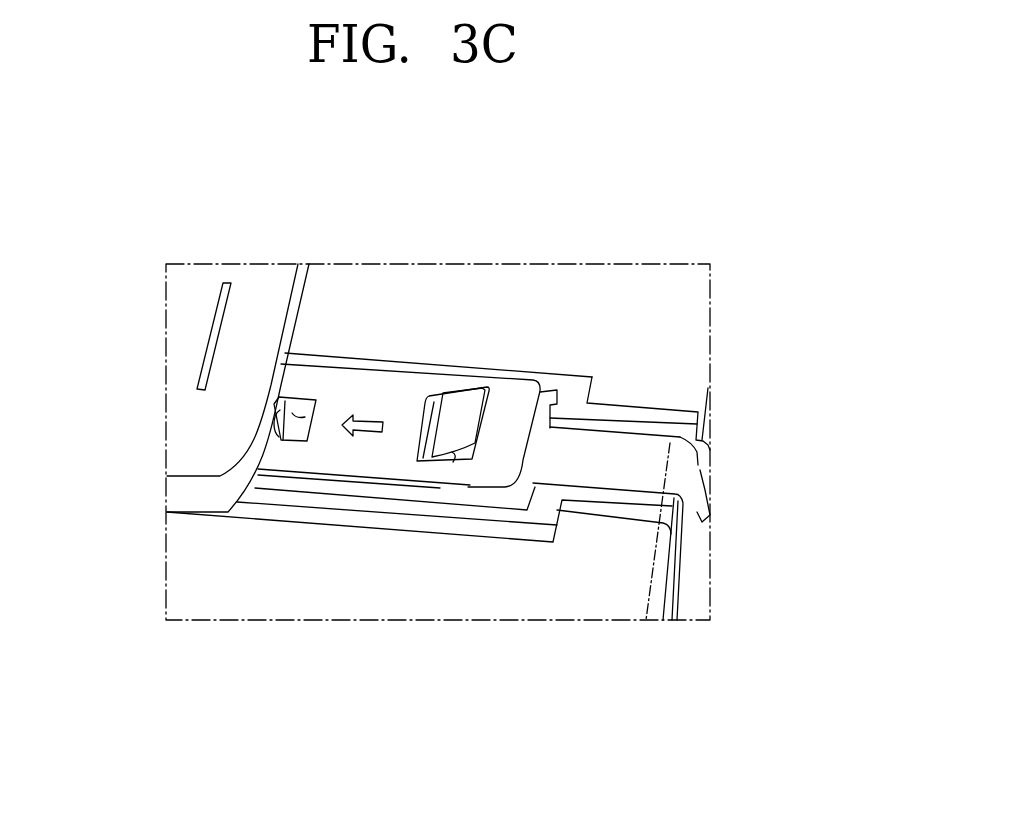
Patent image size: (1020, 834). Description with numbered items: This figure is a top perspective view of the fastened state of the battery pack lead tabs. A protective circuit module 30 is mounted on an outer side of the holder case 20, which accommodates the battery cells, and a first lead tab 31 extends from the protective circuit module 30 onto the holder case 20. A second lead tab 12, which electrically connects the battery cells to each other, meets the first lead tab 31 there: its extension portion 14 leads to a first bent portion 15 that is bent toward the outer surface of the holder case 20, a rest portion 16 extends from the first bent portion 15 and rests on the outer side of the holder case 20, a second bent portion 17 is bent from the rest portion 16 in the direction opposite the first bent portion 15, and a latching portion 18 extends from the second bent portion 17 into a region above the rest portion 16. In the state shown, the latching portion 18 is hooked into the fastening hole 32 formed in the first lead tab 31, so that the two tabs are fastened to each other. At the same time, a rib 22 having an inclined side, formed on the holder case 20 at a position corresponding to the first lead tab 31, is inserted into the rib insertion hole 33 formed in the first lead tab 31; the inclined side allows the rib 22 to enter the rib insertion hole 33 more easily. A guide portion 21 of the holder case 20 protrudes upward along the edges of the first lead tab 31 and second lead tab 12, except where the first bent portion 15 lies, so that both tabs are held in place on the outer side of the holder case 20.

The second lead tab 12 is at (700, 592).
The extension portion 14 is at (700, 515).
The first bent portion 15 is at (687, 472).
The rest portion 16 is at (627, 447).
The second bent portion 17 is at (462, 458).
The latching portion 18 is at (479, 388).
The holder case 20 is at (343, 607).
The guide portion 21 is at (407, 370).
The rib 22 is at (270, 430).
The protective circuit module 30 is at (183, 373).
The first lead tab 31 is at (367, 402).
The fastening hole 32 is at (431, 403).
The rib insertion hole 33 is at (303, 399).